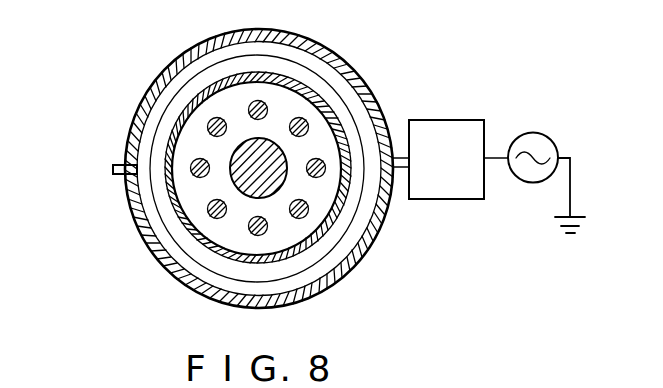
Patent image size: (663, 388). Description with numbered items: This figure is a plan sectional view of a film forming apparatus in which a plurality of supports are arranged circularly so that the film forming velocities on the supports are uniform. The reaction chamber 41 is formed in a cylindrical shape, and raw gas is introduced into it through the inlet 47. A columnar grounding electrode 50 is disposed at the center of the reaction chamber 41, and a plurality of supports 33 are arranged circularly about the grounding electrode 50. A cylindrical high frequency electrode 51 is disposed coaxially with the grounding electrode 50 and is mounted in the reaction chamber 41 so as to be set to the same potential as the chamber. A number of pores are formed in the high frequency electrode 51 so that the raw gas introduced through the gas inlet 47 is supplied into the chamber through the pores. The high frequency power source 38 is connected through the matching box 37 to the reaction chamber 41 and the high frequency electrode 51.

The supports 33 is at (205, 162).
The matching box 37 is at (448, 120).
The high frequency power source 38 is at (535, 132).
The reaction chamber 41 is at (365, 253).
The inlet 47 is at (116, 166).
The columnar grounding electrode 50 is at (272, 145).
The cylindrical high frequency electrode 51 is at (273, 257).